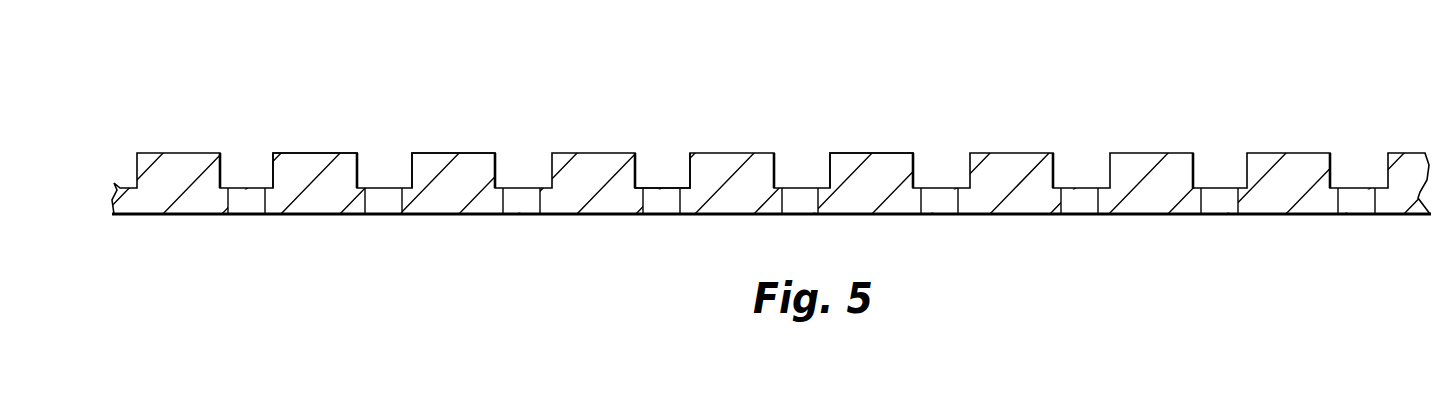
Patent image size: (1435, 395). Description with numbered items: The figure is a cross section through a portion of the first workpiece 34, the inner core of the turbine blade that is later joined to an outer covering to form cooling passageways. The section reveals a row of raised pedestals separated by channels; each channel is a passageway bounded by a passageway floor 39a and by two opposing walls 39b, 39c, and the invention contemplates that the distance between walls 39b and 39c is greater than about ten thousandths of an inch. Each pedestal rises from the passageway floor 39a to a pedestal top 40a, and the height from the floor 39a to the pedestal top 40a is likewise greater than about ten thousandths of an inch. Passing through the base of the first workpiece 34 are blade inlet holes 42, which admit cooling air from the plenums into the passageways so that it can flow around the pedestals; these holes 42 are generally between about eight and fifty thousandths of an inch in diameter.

The first workpiece 34 is at (1147, 190).
The passageway floor 39a is at (683, 187).
The wall 39b is at (359, 156).
The wall 39c is at (397, 155).
The pedestal top 40a is at (895, 153).
The blade inlet hole 42 is at (386, 202).